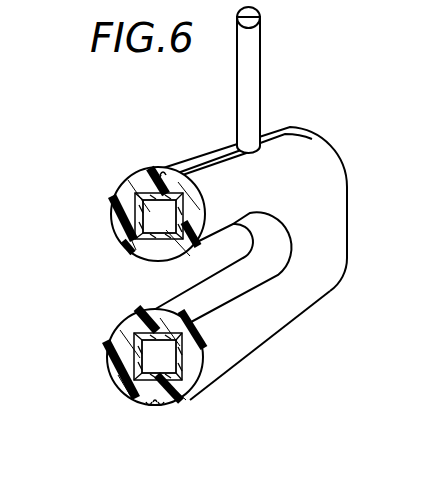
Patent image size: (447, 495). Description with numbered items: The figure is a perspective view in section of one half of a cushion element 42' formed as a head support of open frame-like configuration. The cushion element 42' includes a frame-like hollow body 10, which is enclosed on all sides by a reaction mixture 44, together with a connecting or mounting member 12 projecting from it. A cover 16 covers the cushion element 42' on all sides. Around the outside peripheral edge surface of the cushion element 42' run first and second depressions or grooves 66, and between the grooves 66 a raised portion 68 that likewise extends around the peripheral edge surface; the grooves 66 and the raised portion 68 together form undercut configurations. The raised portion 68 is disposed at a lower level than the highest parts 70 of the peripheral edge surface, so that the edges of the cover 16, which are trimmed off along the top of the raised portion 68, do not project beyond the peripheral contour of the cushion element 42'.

The frame-like hollow body 10 is at (140, 312).
The connecting or mounting member 12 is at (249, 88).
The cover 16 is at (280, 308).
The cushion element 42' is at (273, 227).
The reaction mixture 44 is at (112, 204).
The grooves 66 is at (150, 173).
The raised portion 68 is at (158, 174).
The highest parts 70 is at (140, 175).